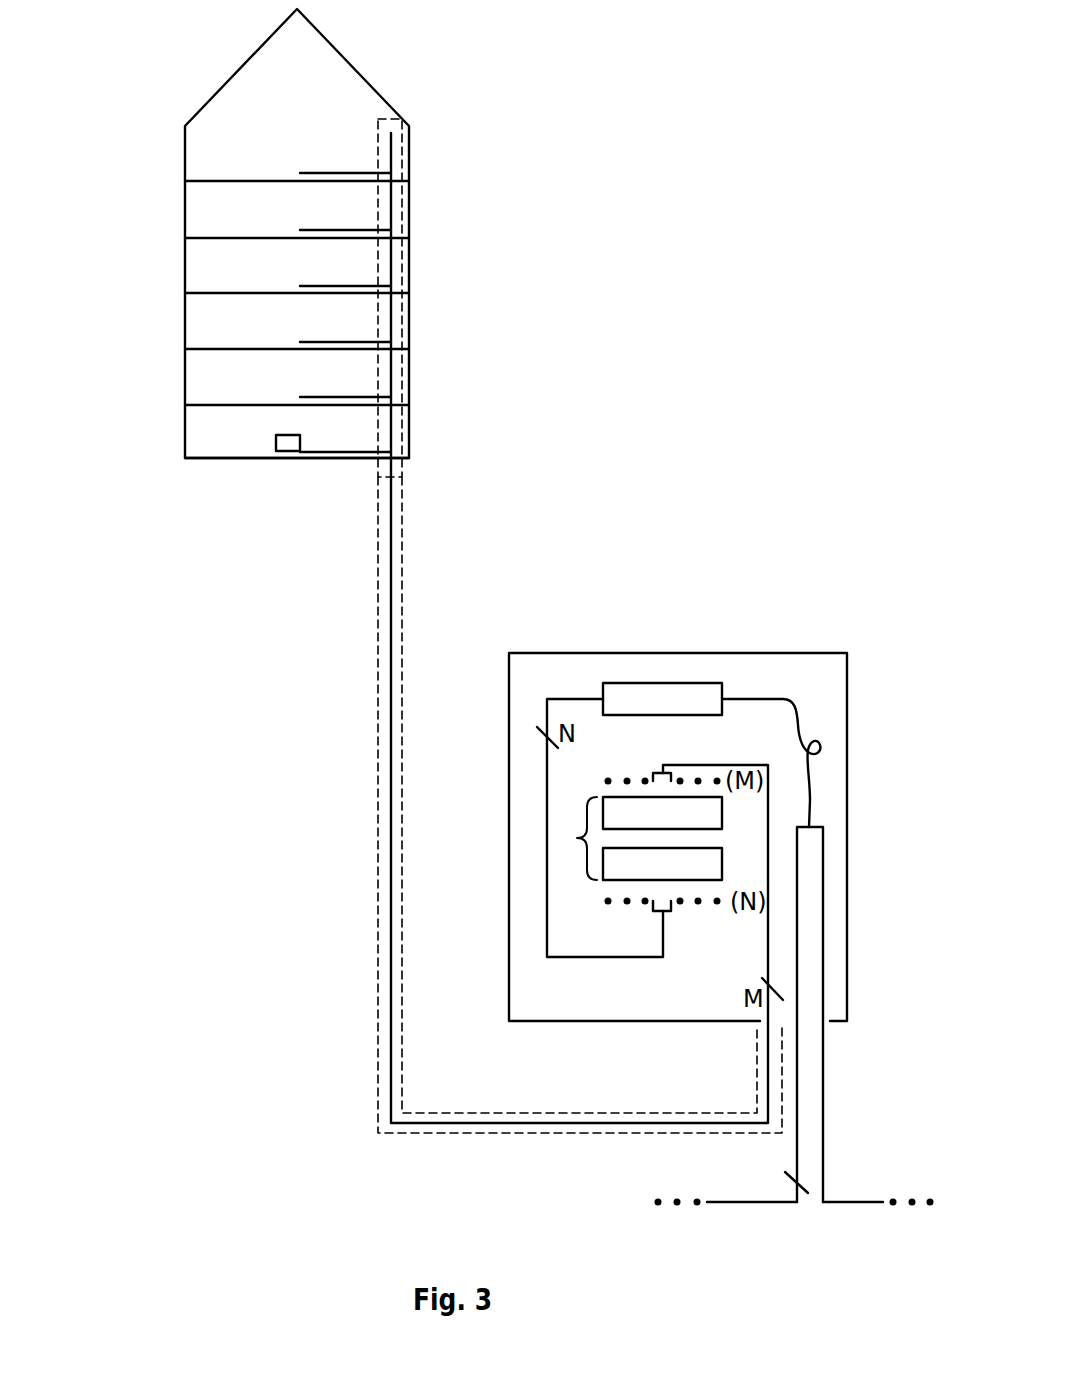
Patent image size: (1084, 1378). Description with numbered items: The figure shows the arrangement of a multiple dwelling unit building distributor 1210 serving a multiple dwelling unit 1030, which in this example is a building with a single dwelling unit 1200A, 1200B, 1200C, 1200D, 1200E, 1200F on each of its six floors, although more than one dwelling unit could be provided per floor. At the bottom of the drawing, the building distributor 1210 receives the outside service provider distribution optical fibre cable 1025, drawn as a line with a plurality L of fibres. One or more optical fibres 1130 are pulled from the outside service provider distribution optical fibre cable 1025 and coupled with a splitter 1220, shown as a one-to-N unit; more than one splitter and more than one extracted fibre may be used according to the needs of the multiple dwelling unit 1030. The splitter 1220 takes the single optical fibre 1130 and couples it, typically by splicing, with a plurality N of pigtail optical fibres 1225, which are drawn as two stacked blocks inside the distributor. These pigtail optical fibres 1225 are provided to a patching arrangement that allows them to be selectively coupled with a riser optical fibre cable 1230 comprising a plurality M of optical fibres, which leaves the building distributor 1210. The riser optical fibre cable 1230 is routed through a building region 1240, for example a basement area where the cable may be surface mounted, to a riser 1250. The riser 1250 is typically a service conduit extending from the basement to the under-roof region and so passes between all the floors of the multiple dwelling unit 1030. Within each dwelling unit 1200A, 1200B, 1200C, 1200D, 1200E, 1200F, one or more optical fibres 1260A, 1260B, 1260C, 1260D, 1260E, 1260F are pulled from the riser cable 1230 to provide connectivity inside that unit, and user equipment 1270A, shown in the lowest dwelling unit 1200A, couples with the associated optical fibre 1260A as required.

The multiple dwelling unit 1030 is at (750, 76).
The dwelling unit 1200A is at (196, 435).
The dwelling unit 1200B is at (196, 377).
The dwelling unit 1200C is at (196, 322).
The dwelling unit 1200D is at (196, 270).
The dwelling unit 1200E is at (197, 218).
The dwelling unit 1200F is at (197, 162).
The optical fibre 1260A is at (367, 452).
The optical fibre 1260B is at (367, 397).
The optical fibre 1260C is at (367, 342).
The optical fibre 1260D is at (367, 286).
The optical fibre 1260E is at (367, 230).
The optical fibre 1260F is at (367, 173).
The user equipment 1270A is at (276, 441).
The riser 1250 is at (402, 473).
The building region 1240 is at (530, 1133).
The riser optical fibre cable 1230 is at (577, 838).
The multiple dwelling unit building distributor 1210 is at (752, 653).
The splitter 1220 is at (662, 683).
The pigtail optical fibres 1225 is at (547, 882).
The optical fibre 1130 is at (810, 800).
The outside service provider distribution optical fibre cable 1025 is at (823, 1167).